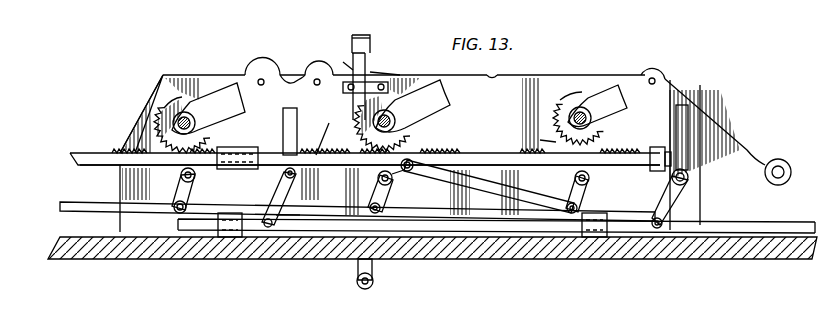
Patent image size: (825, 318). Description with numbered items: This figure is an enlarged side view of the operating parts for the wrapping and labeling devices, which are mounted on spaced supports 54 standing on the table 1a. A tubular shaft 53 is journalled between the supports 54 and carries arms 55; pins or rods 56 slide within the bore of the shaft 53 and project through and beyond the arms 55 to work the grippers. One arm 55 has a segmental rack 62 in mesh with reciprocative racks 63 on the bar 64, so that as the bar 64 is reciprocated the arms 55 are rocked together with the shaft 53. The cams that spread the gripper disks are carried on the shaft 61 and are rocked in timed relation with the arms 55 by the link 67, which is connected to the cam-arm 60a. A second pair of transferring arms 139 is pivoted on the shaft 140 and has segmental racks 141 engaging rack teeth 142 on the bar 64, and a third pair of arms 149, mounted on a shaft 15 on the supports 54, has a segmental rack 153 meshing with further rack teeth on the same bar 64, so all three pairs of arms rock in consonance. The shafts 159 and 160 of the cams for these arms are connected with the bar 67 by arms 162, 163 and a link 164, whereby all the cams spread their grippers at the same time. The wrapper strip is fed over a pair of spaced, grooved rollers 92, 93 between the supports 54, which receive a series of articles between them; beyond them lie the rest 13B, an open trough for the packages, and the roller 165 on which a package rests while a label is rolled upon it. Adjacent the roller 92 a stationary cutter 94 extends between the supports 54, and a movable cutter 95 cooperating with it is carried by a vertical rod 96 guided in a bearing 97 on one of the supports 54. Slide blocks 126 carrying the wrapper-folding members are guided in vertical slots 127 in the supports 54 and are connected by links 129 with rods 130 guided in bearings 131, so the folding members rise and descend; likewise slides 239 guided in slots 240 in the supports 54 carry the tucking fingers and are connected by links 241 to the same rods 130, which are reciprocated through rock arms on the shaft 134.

The table 1a is at (742, 248).
The rods 130 is at (458, 222).
The bearings 131 is at (232, 237).
The link 67 is at (82, 203).
The bar 64 is at (108, 138).
The vertical slots 127 is at (253, 131).
The reciprocative racks 63 is at (378, 153).
The segmental rack 62 is at (153, 112).
The roller 93 is at (268, 70).
The roller 92 is at (318, 62).
The rest 13B is at (496, 84).
The roller 165 is at (665, 70).
The movable cutter 95 is at (371, 50).
The rod 96 is at (370, 40).
The stationary cutter 94 is at (343, 63).
The bearing 97 is at (343, 92).
The pins or rods 56 is at (182, 112).
The tubular shaft 53 is at (190, 112).
The arms 55 is at (208, 108).
The segmental racks 141 is at (352, 122).
The shaft 140 is at (392, 128).
The arms 139 is at (428, 100).
The segmental rack 153 is at (555, 114).
The shaft 134 is at (533, 142).
The supports 54 is at (546, 97).
The shaft 15 is at (590, 126).
The arms 149 is at (612, 98).
The slots 240 is at (705, 82).
The slides 239 is at (682, 165).
The links 241 is at (690, 195).
The shaft 61 is at (180, 179).
The cam-arm 60a is at (172, 212).
The slide blocks 126 is at (294, 167).
The links 129 is at (280, 190).
The rack teeth 142 is at (320, 163).
The shaft 159 is at (398, 183).
The arm 162 is at (385, 200).
The link 164 is at (555, 186).
The shaft 160 is at (590, 176).
The arm 163 is at (588, 188).